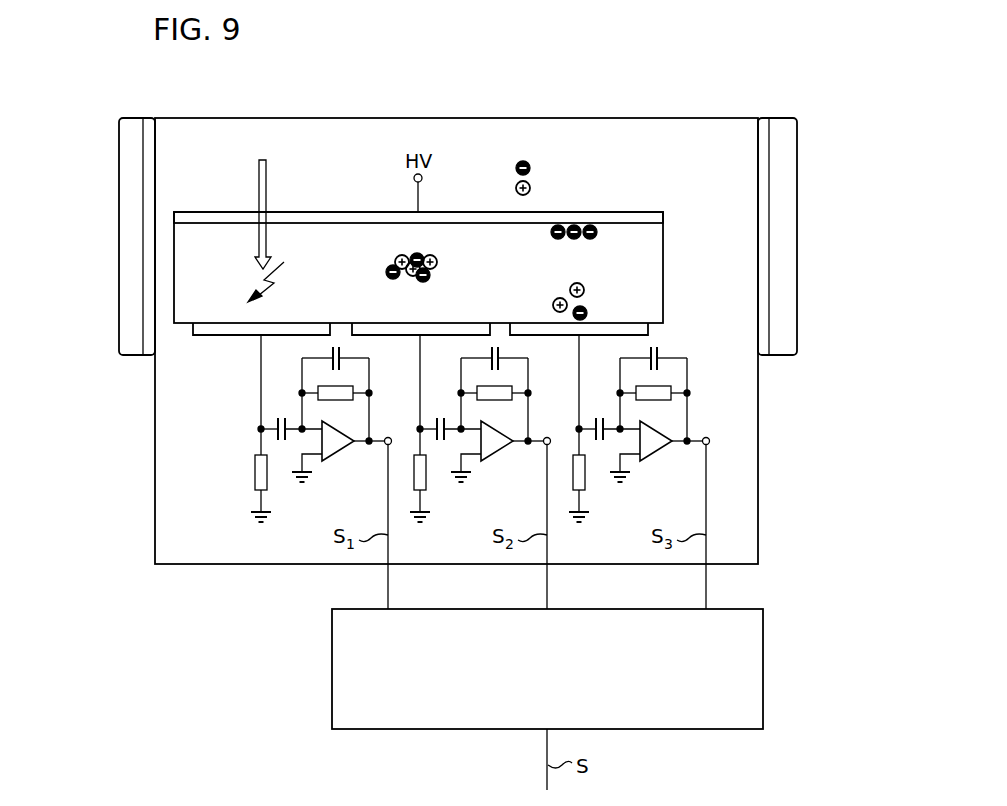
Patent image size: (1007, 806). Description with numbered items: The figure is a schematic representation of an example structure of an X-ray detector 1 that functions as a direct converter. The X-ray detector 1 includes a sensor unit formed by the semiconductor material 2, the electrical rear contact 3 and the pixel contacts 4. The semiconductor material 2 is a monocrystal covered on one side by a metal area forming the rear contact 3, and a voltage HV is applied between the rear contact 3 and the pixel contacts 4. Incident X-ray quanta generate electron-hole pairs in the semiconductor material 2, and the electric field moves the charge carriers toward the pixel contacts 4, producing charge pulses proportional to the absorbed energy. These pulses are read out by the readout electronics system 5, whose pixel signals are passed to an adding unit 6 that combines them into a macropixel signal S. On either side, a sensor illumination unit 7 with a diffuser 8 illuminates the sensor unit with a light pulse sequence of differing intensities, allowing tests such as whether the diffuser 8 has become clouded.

The X-ray detector 1 is at (710, 98).
The semiconductor material 2 is at (664, 270).
The electrical rear contact 3 is at (332, 212).
The pixel contacts 4 is at (212, 336).
The readout electronics system 5 is at (338, 464).
The adding unit 6 is at (332, 669).
The sensor illumination unit 7 is at (113, 174).
The diffuser 8 is at (152, 122).